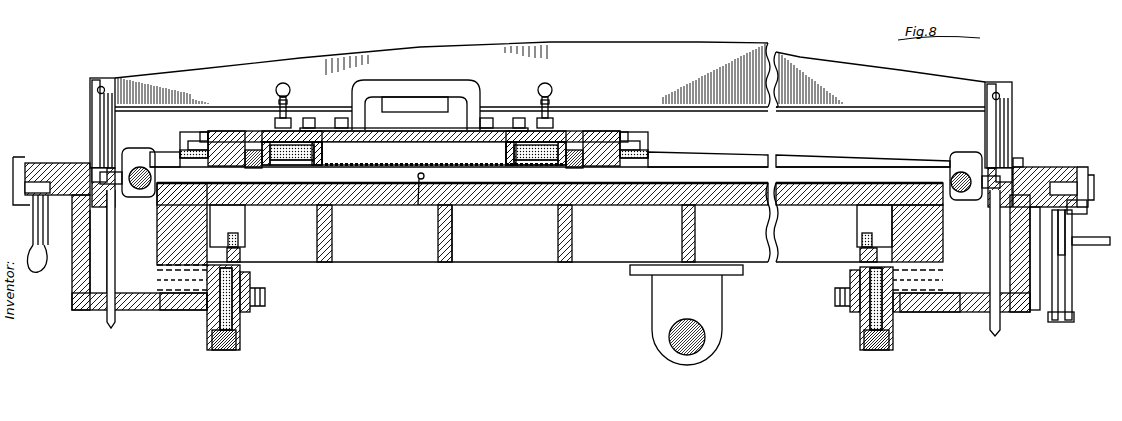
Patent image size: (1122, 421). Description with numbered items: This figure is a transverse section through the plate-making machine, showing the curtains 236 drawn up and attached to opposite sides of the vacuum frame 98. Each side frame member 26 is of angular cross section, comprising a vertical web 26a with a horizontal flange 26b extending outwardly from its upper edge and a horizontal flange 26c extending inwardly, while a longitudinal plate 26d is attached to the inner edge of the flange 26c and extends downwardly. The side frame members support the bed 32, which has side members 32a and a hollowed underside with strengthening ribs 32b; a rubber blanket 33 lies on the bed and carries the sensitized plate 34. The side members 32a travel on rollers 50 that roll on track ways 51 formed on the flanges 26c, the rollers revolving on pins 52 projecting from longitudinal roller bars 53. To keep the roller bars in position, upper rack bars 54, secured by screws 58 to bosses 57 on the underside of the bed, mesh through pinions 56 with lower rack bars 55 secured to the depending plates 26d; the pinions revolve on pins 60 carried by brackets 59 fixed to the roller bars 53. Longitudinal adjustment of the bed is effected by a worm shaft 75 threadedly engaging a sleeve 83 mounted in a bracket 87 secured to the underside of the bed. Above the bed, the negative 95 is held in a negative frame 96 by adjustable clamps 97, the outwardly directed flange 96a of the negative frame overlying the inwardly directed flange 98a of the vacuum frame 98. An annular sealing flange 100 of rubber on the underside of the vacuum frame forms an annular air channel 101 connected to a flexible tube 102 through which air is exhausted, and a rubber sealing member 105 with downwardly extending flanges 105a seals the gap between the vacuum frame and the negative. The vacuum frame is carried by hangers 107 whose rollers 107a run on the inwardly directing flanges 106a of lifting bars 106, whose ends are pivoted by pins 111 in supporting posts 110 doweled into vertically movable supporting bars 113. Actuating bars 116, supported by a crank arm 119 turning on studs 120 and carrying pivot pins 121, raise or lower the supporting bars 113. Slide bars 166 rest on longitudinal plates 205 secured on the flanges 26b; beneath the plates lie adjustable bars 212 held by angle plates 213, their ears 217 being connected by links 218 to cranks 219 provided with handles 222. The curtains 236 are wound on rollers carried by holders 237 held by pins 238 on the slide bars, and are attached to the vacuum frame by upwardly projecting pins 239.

The side frame member 26 is at (78, 303).
The vertical web 26a is at (1030, 273).
The horizontal flange 26b is at (1068, 208).
The horizontal flange 26c is at (133, 310).
The longitudinal plate 26d is at (207, 345).
The bed 32 is at (497, 205).
The side member 32a is at (170, 240).
The strengthening rib 32b is at (332, 262).
The rubber blanket 33 is at (483, 205).
The sensitized plate 34 is at (418, 205).
The roller 50 is at (152, 310).
The track way 51 is at (183, 308).
The pin 52 is at (165, 281).
The roller bar 53 is at (207, 268).
The upper rack bar 54 is at (242, 254).
The lower rack bar 55 is at (240, 338).
The pinion 56 is at (245, 318).
The boss 57 is at (238, 217).
The screw 58 is at (231, 235).
The bracket 59 is at (252, 277).
The pin 60 is at (266, 298).
The worm shaft 75 is at (668, 338).
The sleeve 83 is at (711, 346).
The bracket 87 is at (667, 298).
The negative 95 is at (405, 162).
The negative frame 96 is at (305, 128).
The outwardly directed flange 96a is at (262, 128).
The adjustable clamp 97 is at (320, 168).
The vacuum frame 98 is at (213, 138).
The inwardly directed flange 98a is at (272, 166).
The annular sealing flange 100 is at (217, 140).
The annular air channel 101 is at (235, 140).
The flexible tube 102 is at (393, 82).
The rubber sealing member 105 is at (323, 143).
The downwardly extending flange 105a is at (480, 140).
The lifting bar 106 is at (720, 53).
The inwardly directing flange 106a is at (742, 106).
The hanger 107 is at (313, 128).
The roller 107a is at (283, 82).
The supporting post 110 is at (97, 125).
The pin 111 is at (105, 78).
The supporting bar 113 is at (113, 150).
The actuating bar 116 is at (115, 200).
The crank arm 119 is at (107, 315).
The stud 120 is at (112, 213).
The pivot pin 121 is at (1028, 152).
The slide bar 166 is at (879, 160).
The longitudinal plate 205 is at (33, 166).
The bar 212 is at (1091, 163).
The angle plate 213 is at (1107, 163).
The ear 217 is at (1075, 238).
The link 218 is at (43, 248).
The crank 219 is at (45, 278).
The handle 222 is at (1070, 250).
The curtain 236 is at (180, 152).
The holder 237 is at (123, 150).
The pin 238 is at (948, 141).
The pin 239 is at (183, 130).